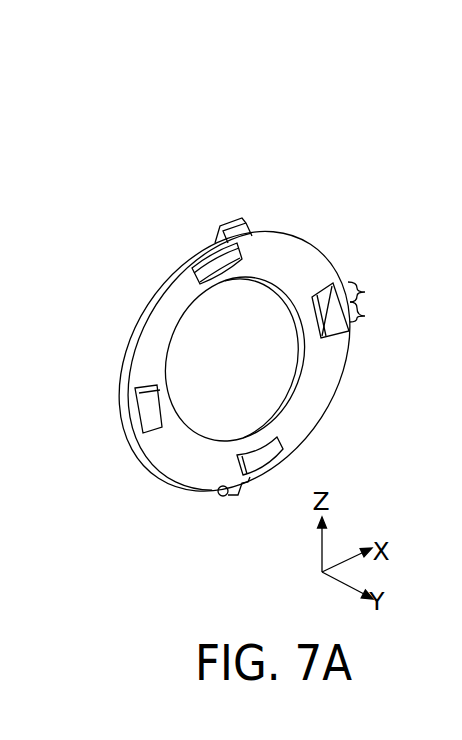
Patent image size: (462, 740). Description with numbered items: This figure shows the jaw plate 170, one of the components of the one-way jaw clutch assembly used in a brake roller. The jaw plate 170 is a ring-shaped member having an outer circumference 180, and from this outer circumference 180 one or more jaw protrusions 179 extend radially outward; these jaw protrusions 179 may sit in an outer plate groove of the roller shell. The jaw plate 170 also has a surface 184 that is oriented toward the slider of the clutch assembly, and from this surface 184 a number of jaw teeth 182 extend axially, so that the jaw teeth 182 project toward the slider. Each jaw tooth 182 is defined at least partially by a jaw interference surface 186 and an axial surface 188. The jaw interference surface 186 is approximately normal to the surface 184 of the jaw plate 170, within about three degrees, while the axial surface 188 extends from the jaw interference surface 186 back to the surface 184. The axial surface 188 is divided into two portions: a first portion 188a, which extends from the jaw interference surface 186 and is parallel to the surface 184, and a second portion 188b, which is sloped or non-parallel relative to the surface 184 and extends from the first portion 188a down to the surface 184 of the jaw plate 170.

The jaw plate 170 is at (178, 157).
The jaw protrusion 179 is at (246, 221).
The outer circumference 180 is at (327, 413).
The jaw tooth 182 is at (210, 262).
The surface 184 is at (296, 272).
The jaw interference surface 186 is at (145, 390).
The axial surface 188 is at (228, 262).
The first portion 188a is at (365, 316).
The second portion 188b is at (365, 292).